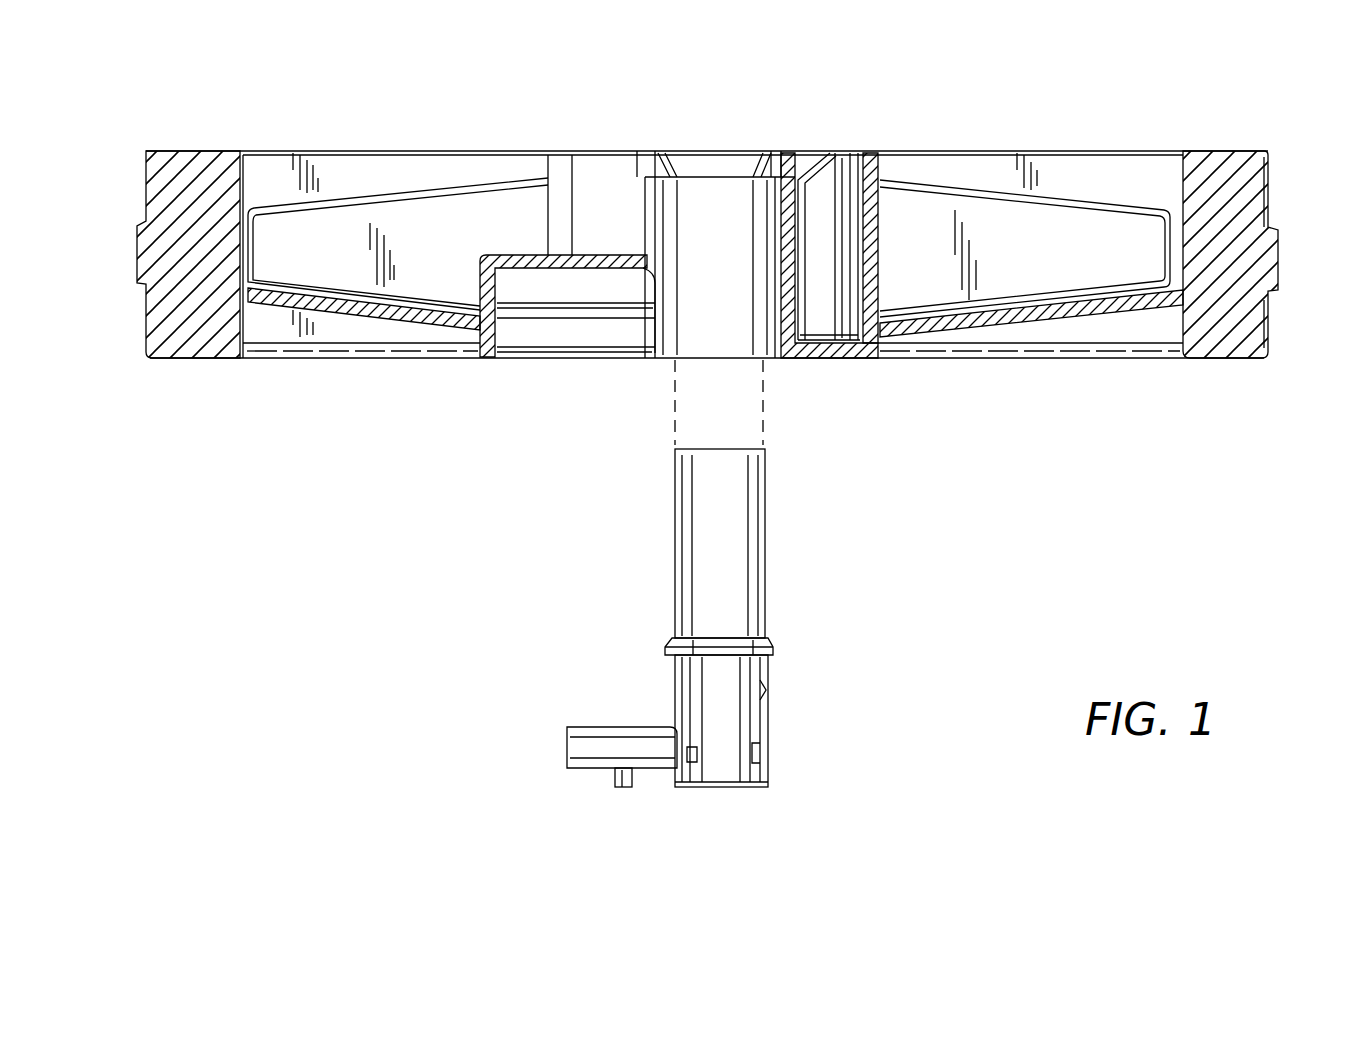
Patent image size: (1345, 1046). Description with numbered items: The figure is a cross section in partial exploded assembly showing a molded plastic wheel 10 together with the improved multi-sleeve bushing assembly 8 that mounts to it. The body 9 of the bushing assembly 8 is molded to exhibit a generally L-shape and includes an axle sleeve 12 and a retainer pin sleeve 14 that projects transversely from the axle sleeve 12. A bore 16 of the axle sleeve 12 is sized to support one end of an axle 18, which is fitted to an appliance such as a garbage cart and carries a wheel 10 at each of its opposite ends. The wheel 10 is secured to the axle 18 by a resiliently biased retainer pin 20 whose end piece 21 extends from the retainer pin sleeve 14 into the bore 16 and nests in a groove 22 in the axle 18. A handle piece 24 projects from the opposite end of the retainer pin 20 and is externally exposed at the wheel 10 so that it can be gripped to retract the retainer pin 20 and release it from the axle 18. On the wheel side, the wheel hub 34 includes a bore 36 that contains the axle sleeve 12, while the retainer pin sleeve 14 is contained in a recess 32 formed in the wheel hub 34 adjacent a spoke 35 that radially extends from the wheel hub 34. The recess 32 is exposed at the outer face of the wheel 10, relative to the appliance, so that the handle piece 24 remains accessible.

The molded wheel 10 is at (1283, 151).
The spoke 35 is at (388, 223).
The bore 36 is at (730, 187).
The recess 32 is at (537, 268).
The wheel hub 34 is at (835, 362).
The multi-sleeve bushing assembly 8 is at (776, 537).
The body 9 is at (672, 519).
The axle sleeve 12 is at (705, 591).
The retainer pin sleeve 14 is at (597, 727).
The bore 16 is at (760, 683).
The axle 18 is at (735, 720).
The retainer pin 20 is at (615, 777).
The end piece 21 is at (677, 770).
The groove 22 is at (755, 752).
The handle piece 24 is at (615, 787).